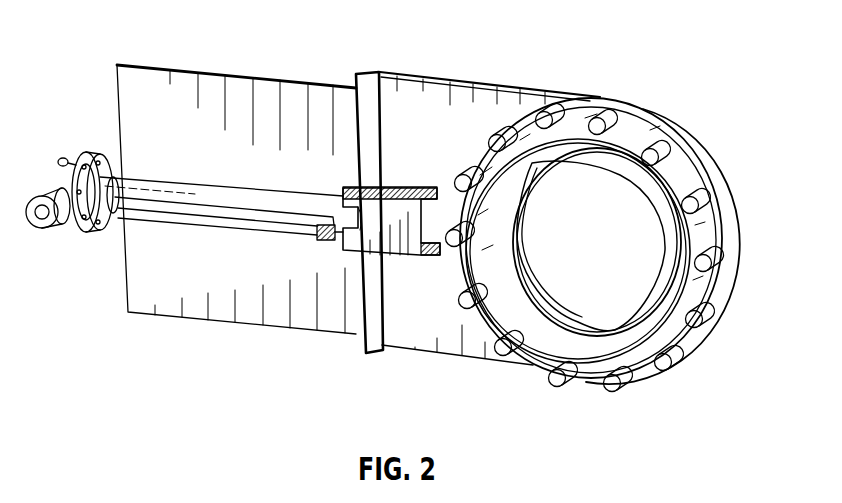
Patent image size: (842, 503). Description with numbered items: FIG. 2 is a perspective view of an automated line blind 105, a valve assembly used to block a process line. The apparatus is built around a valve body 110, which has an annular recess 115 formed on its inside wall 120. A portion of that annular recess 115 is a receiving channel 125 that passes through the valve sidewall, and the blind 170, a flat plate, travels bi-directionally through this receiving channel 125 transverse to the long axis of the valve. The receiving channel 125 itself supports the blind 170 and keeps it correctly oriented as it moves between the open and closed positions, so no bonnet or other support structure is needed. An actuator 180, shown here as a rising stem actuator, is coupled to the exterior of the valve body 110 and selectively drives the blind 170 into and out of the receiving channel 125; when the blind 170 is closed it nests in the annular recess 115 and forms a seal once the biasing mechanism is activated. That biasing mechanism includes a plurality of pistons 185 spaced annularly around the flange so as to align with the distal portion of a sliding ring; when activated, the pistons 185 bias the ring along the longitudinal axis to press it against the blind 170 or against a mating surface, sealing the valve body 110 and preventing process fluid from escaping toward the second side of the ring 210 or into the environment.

The automated line blind 105 is at (727, 134).
The valve body 110 is at (435, 98).
The annular recess 115 is at (530, 183).
The inside wall 120 is at (547, 318).
The receiving channel 125 is at (350, 108).
The blind 170 is at (180, 90).
The actuator 180 is at (145, 193).
The pistons 185 is at (600, 125).
The second side of the ring 210 is at (362, 74).